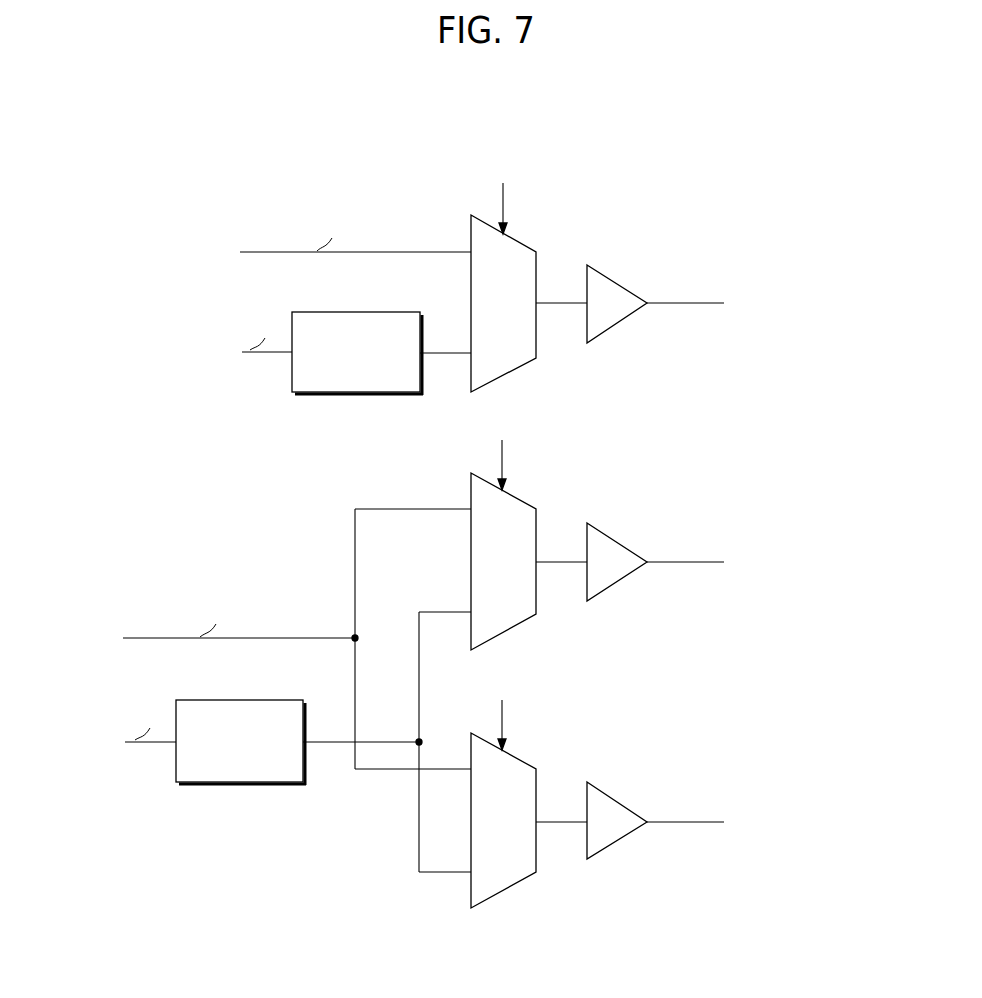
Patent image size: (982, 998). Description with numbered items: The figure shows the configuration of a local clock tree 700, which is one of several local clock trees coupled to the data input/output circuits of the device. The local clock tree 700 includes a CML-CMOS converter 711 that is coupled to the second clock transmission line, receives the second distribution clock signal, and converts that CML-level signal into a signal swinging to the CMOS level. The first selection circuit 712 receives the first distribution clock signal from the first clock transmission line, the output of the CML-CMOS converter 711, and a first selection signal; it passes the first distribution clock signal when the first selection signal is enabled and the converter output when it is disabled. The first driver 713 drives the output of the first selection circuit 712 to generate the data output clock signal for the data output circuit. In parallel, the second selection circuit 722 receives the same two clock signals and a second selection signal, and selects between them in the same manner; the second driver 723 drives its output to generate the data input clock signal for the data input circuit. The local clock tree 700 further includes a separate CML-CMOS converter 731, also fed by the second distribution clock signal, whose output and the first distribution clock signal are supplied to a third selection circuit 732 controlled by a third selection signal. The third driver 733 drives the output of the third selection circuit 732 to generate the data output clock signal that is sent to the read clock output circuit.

The local clock tree 700 is at (238, 143).
The CML-CMOS converter 711 is at (267, 698).
The first selection circuit 712 is at (522, 500).
The first driver 713 is at (608, 525).
The second selection circuit 722 is at (522, 760).
The second driver 723 is at (608, 784).
The CML-CMOS converter 731 is at (406, 296).
The third selection circuit 732 is at (522, 242).
The third driver 733 is at (608, 266).